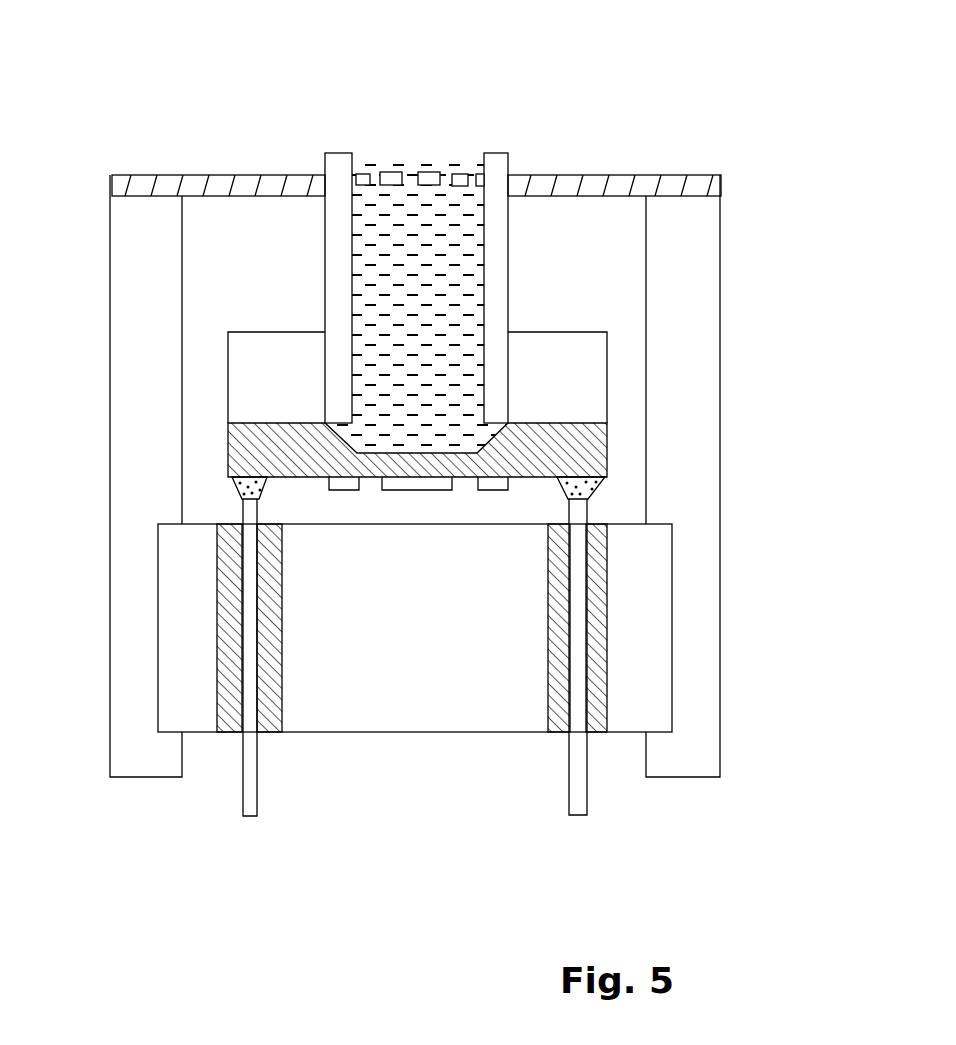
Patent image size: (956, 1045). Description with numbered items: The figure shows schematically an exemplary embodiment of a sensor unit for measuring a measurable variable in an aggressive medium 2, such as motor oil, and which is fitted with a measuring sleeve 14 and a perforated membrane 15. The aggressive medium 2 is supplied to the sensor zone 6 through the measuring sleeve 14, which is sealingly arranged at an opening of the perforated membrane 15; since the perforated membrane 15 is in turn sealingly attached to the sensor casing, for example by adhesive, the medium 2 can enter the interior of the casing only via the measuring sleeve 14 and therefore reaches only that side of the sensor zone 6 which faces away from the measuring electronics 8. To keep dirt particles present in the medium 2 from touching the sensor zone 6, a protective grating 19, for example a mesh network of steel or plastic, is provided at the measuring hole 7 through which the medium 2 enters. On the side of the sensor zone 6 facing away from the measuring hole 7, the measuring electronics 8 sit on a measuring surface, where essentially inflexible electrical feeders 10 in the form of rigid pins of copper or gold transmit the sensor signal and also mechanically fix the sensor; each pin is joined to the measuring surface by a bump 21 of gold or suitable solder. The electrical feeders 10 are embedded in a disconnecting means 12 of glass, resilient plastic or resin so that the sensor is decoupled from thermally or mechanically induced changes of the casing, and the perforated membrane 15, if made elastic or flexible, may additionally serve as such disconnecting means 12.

The medium 2 is at (420, 220).
The sensor zone 6 is at (607, 468).
The measuring hole 7 is at (389, 168).
The measuring electronics 8 is at (342, 490).
The electrical feeder 10 is at (575, 780).
The disconnecting means 12 is at (600, 627).
The measuring sleeve 14 is at (499, 175).
The perforated membrane 15 is at (618, 175).
The protective grating 19 is at (362, 175).
The bump 21 is at (232, 489).